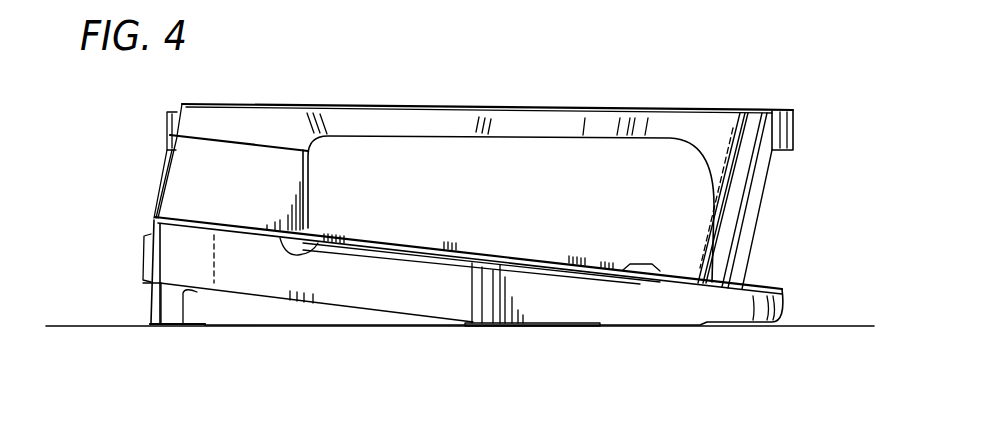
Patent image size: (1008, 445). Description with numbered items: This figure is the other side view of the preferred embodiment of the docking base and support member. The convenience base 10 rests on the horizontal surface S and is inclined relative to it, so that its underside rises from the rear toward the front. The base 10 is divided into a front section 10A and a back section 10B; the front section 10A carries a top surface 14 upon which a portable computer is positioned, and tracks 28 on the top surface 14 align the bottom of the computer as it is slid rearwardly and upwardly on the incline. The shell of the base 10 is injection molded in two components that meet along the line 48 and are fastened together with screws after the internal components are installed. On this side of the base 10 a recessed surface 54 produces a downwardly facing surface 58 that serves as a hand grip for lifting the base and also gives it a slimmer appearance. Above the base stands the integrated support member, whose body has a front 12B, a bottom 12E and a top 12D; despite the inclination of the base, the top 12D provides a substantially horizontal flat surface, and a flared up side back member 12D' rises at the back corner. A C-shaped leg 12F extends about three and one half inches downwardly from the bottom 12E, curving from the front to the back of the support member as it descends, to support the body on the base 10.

The convenience base 10 is at (131, 167).
The front section 10A is at (703, 300).
The back section 10B is at (187, 197).
The front 12B is at (797, 128).
The top 12D is at (487, 91).
The flared up side back member 12D' is at (247, 100).
The bottom 12E is at (393, 137).
The leg 12F is at (757, 211).
The top surface 14 is at (683, 272).
The tracks 28 is at (464, 243).
The line 48 is at (323, 237).
The recessed surface 54 is at (270, 310).
The downwardly facing surface 58 is at (190, 296).
The horizontal surface S is at (845, 323).